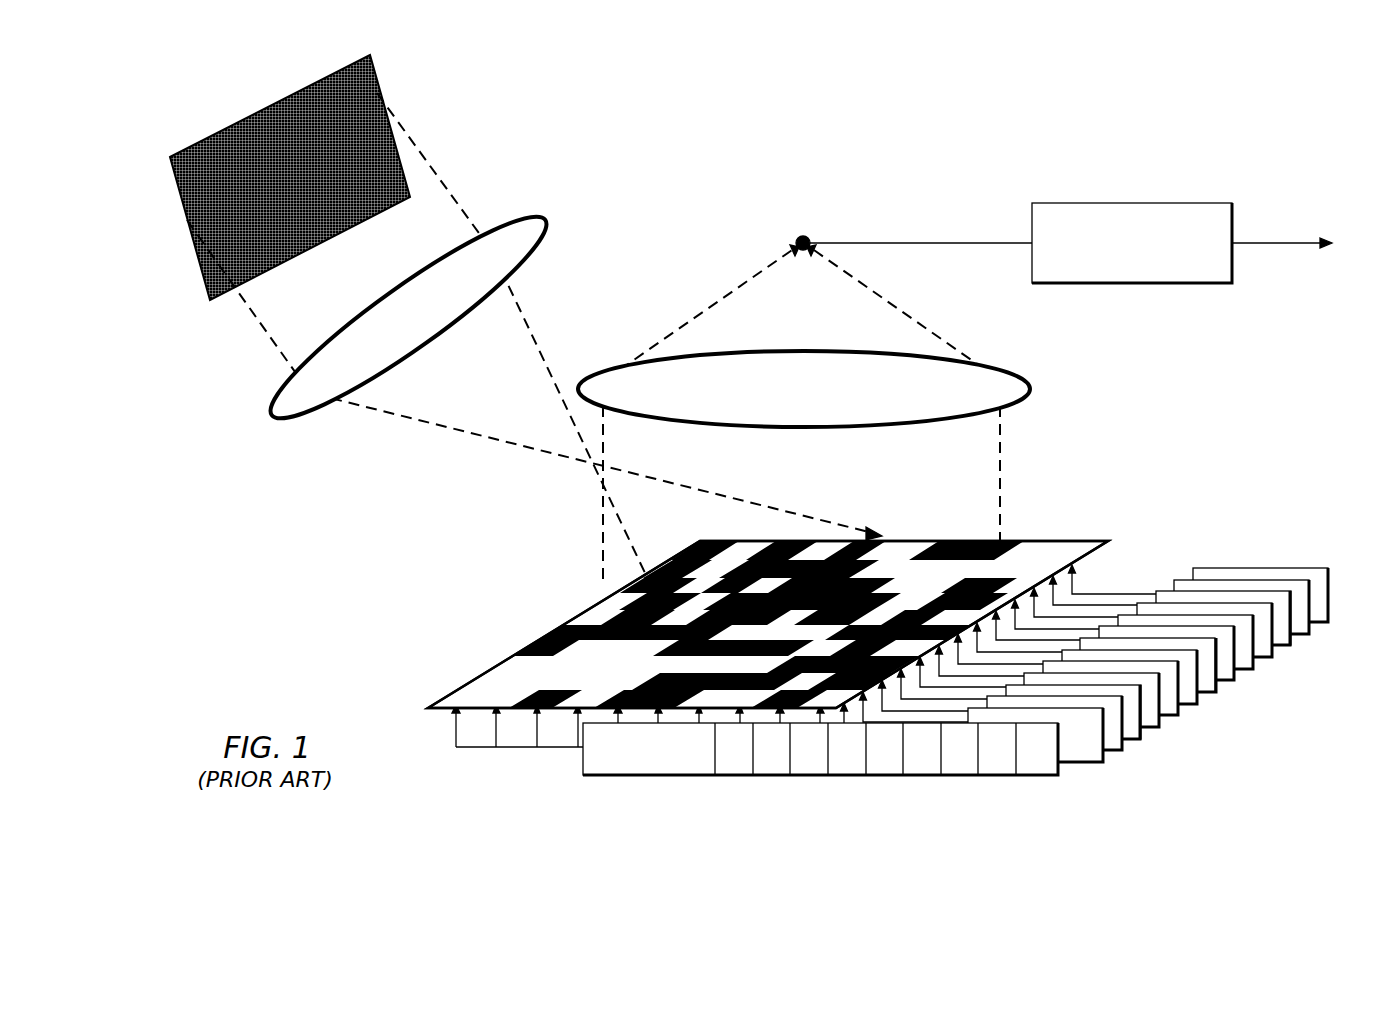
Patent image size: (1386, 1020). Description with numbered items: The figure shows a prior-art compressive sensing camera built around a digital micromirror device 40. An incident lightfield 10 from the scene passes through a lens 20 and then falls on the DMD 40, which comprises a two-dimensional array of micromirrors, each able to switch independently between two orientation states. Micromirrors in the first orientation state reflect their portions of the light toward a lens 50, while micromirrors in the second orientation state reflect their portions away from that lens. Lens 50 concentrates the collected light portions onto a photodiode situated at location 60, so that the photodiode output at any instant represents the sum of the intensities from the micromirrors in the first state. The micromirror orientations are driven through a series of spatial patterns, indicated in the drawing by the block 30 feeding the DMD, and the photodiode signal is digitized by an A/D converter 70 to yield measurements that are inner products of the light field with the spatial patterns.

The incident lightfield 10 is at (238, 123).
The lens 20 is at (533, 220).
The random number generator 30 is at (660, 778).
The digital micromirror device 40 is at (490, 667).
The lens 50 is at (622, 365).
The photodiode location 60 is at (794, 233).
The A/D converter 70 is at (1142, 202).